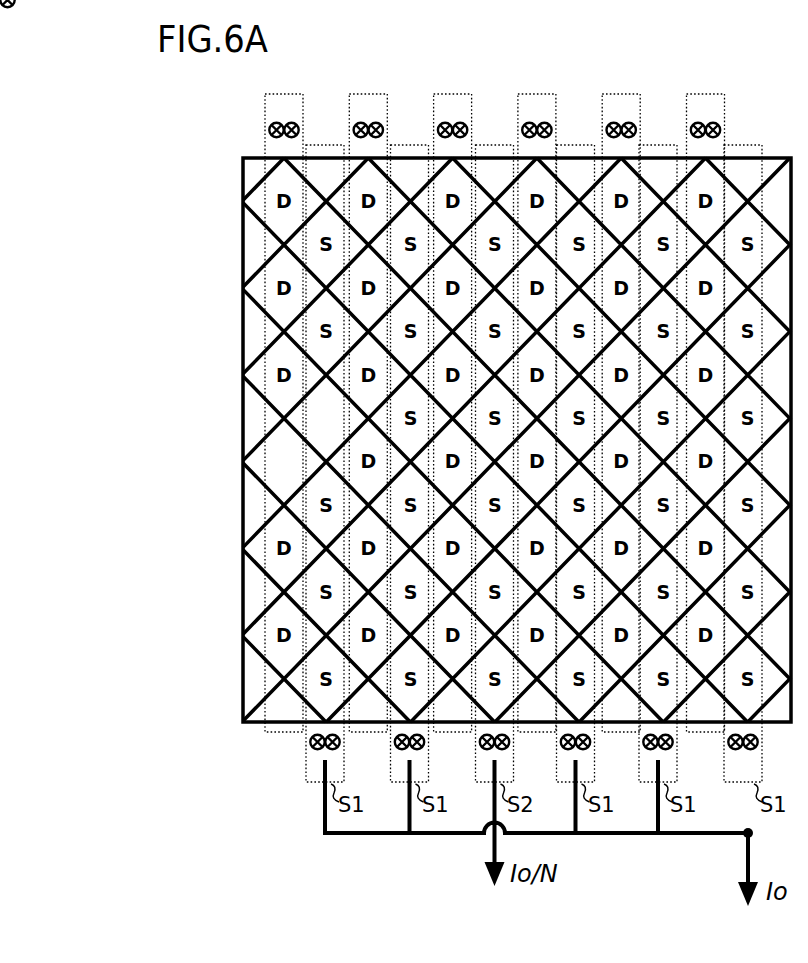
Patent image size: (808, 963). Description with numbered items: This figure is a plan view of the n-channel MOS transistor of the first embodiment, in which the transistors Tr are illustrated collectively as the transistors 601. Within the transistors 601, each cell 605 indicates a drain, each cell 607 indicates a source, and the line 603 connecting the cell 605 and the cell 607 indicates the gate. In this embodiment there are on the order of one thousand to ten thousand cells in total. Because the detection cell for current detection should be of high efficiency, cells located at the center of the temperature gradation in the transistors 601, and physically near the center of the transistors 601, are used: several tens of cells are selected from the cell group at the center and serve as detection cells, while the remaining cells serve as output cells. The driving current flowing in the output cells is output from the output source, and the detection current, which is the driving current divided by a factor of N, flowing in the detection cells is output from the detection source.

The transistors 601 is at (273, 772).
The gate line 603 is at (257, 562).
The drain cell 605 is at (273, 462).
The source cell 607 is at (312, 423).